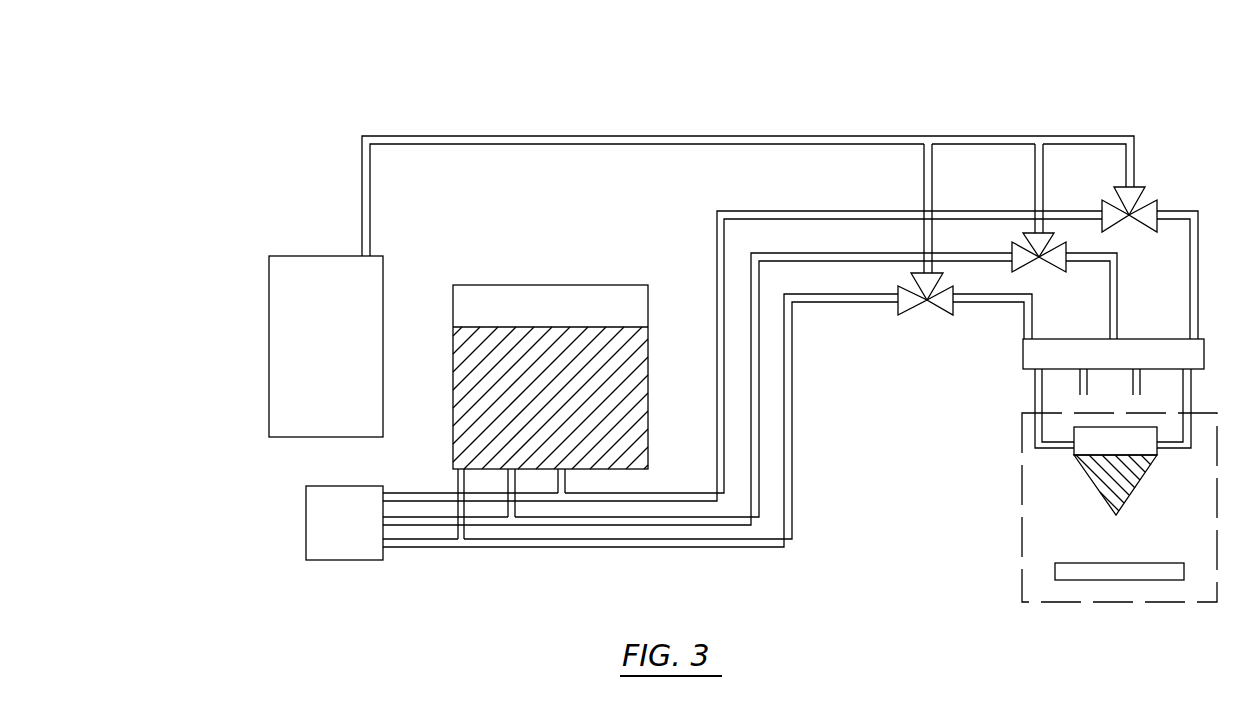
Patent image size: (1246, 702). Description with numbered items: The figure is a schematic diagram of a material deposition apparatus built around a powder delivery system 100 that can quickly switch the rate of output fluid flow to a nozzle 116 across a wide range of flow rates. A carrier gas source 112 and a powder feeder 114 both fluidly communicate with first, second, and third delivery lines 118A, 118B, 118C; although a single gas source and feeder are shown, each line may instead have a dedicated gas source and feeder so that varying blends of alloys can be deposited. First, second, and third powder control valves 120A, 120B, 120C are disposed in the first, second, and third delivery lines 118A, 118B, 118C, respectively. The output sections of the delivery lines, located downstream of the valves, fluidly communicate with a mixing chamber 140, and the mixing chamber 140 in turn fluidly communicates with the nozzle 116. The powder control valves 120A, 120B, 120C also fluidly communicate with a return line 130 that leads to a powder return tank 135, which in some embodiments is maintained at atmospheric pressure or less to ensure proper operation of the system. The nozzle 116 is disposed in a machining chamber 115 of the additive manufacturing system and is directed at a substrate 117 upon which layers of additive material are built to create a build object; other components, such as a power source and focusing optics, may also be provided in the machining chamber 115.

The powder delivery system 100 is at (518, 72).
The carrier gas source 112 is at (350, 556).
The powder feeder 114 is at (568, 284).
The machining chamber 115 is at (1042, 604).
The nozzle 116 is at (1104, 492).
The substrate 117 is at (1145, 568).
The first delivery line 118A is at (716, 222).
The second delivery line 118B is at (737, 525).
The third delivery line 118C is at (795, 450).
The first powder control valve 120A is at (1140, 200).
The second powder control valve 120B is at (1046, 266).
The third powder control valve 120C is at (925, 312).
The return line 130 is at (748, 133).
The powder return tank 135 is at (303, 256).
The mixing chamber 140 is at (1022, 360).